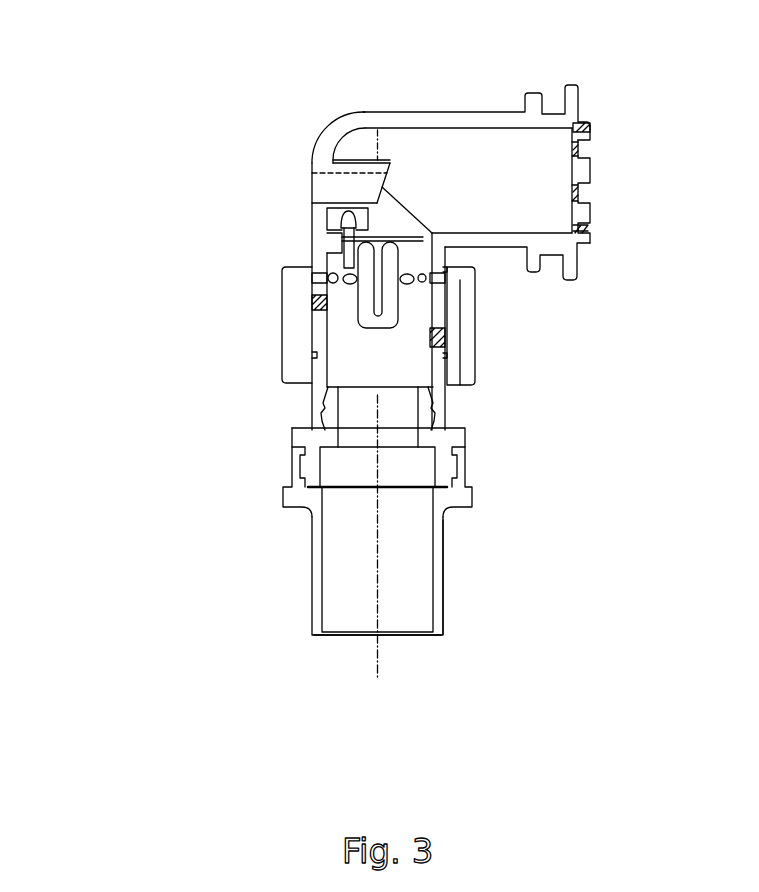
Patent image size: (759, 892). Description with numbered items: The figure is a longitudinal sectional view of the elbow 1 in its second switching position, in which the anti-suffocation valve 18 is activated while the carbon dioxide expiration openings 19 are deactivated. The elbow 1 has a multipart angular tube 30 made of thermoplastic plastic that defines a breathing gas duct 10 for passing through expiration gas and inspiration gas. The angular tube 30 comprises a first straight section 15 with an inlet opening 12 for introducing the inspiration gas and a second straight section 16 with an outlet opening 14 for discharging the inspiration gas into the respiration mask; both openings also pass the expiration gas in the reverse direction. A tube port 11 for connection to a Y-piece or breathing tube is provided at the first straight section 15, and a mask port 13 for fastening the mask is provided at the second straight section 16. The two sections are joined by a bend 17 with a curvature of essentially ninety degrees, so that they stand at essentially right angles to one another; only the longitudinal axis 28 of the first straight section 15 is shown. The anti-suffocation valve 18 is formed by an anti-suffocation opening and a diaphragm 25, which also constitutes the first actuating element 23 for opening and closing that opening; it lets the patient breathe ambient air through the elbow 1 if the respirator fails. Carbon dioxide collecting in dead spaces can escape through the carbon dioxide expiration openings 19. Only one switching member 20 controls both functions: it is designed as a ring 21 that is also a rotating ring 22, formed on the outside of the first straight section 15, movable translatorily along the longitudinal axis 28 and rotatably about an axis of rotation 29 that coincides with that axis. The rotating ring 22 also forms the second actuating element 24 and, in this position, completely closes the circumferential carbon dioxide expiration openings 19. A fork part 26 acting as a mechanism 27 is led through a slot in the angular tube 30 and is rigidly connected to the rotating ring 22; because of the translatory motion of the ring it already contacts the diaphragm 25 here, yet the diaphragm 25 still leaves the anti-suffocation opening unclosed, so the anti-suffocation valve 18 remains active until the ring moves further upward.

The elbow 1 is at (590, 432).
The breathing gas duct 10 is at (432, 145).
The tube port 11 is at (437, 587).
The inlet opening 12 is at (420, 600).
The mask port 13 is at (552, 113).
The outlet opening 14 is at (555, 172).
The first straight section 15 is at (318, 580).
The second straight section 16 is at (470, 118).
The bend 17 is at (338, 135).
The anti-suffocation valve 18 is at (322, 193).
The carbon dioxide expiration openings 19 is at (430, 278).
The switching member 20 is at (266, 326).
The ring 21 is at (266, 326).
The rotating ring 22 is at (266, 326).
The first actuating element 23 is at (553, 315).
The second actuating element 24 is at (290, 288).
The diaphragm 25 is at (328, 237).
The fork part 26 is at (553, 315).
The mechanism 27 is at (388, 310).
The longitudinal axis 28 is at (361, 572).
The axis of rotation 29 is at (375, 648).
The angular tube 30 is at (361, 379).